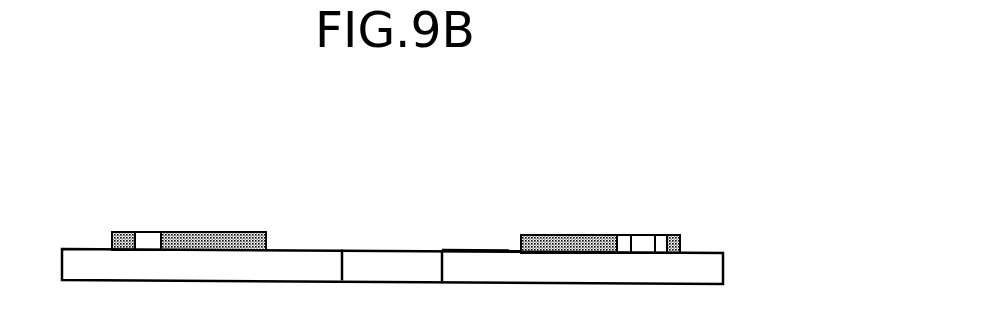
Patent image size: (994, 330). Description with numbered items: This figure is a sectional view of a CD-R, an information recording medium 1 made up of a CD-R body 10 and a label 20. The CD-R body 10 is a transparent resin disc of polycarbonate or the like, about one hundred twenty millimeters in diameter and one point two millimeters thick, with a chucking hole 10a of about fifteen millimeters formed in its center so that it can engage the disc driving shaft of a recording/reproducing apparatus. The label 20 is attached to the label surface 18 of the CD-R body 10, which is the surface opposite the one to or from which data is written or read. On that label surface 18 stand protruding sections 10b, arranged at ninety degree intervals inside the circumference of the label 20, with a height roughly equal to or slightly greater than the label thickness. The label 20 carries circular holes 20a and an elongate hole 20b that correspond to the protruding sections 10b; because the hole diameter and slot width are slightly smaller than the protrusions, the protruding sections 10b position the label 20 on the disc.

The semiconductor device 1 is at (445, 143).
The CD-R body 10 is at (703, 253).
The chucking hole 10a is at (353, 250).
The protruding sections 10b is at (150, 232).
The label surface 18 is at (492, 251).
The label 20 is at (253, 232).
The circular holes 20a is at (158, 232).
The elongate hole 20b is at (660, 235).